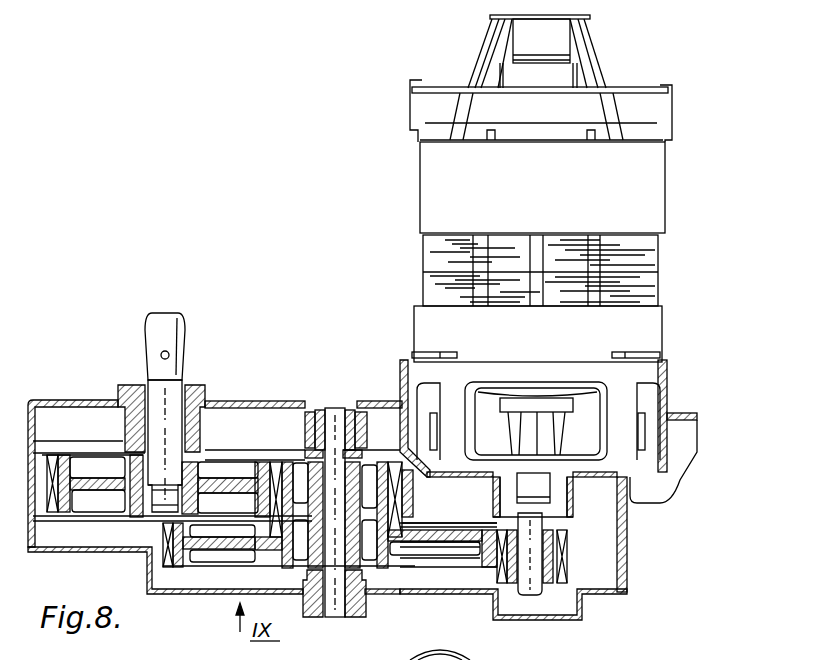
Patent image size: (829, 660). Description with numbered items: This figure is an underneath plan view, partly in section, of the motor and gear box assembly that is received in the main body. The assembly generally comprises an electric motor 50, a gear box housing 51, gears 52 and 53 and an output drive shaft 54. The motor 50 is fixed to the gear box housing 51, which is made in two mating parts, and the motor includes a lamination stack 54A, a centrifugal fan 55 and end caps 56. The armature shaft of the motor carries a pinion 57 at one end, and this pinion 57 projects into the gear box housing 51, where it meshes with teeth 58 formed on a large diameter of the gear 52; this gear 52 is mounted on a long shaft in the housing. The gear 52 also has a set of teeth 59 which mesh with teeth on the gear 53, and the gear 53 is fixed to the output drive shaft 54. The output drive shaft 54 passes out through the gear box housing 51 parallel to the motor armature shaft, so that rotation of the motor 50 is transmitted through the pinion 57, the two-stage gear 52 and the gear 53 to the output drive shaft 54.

The electric motor 50 is at (510, 188).
The gear box housing 51 is at (617, 560).
The gear 52 is at (288, 468).
The gear 53 is at (98, 478).
The output drive shaft 54 is at (173, 333).
The lamination stack 54A is at (445, 239).
The centrifugal fan 55 is at (590, 423).
The end caps 56 is at (418, 172).
The pinion 57 is at (527, 587).
The teeth 58 is at (487, 533).
The teeth 59 is at (393, 470).